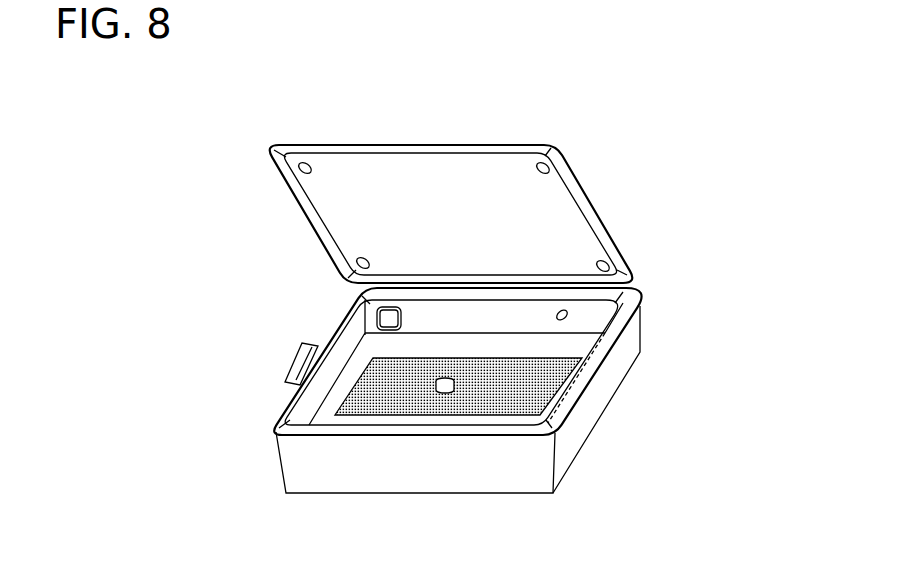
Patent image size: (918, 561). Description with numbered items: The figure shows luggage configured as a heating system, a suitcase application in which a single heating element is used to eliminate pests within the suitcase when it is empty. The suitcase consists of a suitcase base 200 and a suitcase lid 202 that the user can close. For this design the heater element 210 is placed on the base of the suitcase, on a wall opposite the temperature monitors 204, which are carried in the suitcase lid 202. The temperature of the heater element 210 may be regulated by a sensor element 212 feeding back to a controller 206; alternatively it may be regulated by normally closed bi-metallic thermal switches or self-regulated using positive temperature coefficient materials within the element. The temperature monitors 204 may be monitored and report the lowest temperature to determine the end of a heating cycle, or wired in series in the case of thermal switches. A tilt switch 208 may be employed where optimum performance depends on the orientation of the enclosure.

The suitcase base 200 is at (285, 474).
The suitcase lid 202 is at (603, 203).
The temperature monitors 204 is at (596, 262).
The controller 206 is at (386, 319).
The tilt switch 208 is at (572, 311).
The heater element 210 is at (513, 385).
The sensor element 212 is at (418, 384).